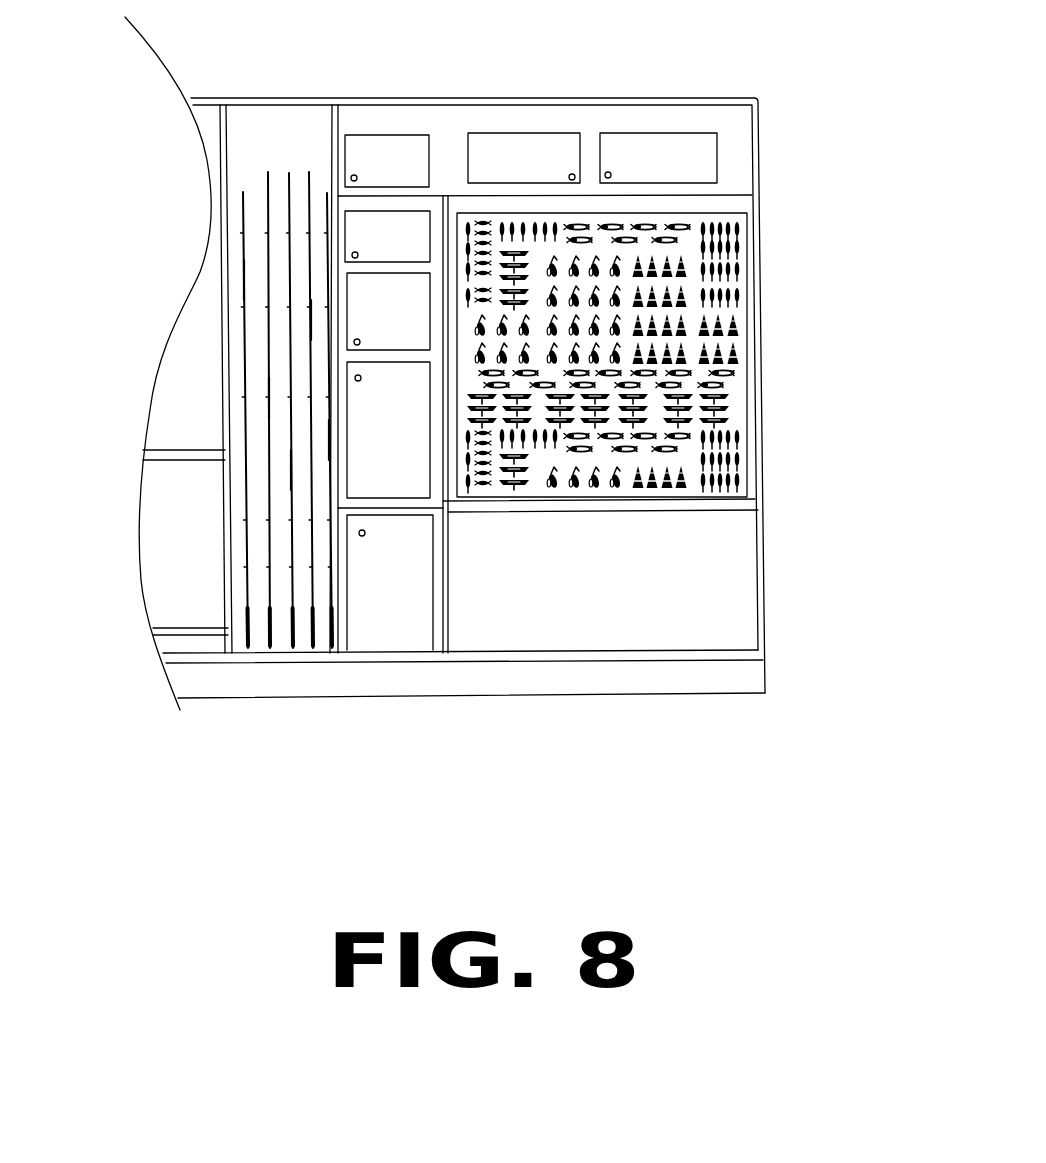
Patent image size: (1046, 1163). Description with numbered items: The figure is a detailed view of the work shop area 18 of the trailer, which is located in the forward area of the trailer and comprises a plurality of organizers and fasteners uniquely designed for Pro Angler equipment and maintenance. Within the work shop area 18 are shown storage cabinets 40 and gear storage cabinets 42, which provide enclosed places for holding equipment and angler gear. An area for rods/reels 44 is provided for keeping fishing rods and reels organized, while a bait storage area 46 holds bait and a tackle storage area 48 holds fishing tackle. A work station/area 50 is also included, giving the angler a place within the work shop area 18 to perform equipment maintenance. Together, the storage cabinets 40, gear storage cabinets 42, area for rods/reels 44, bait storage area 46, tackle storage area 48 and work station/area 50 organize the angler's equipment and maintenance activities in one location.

The work shop area 18 is at (630, 603).
The storage cabinets 40 is at (610, 153).
The gear storage cabinets 42 is at (358, 240).
The area for rods/reels 44 is at (257, 420).
The bait storage area 46 is at (705, 272).
The tackle storage area 48 is at (708, 393).
The work station/area 50 is at (737, 498).